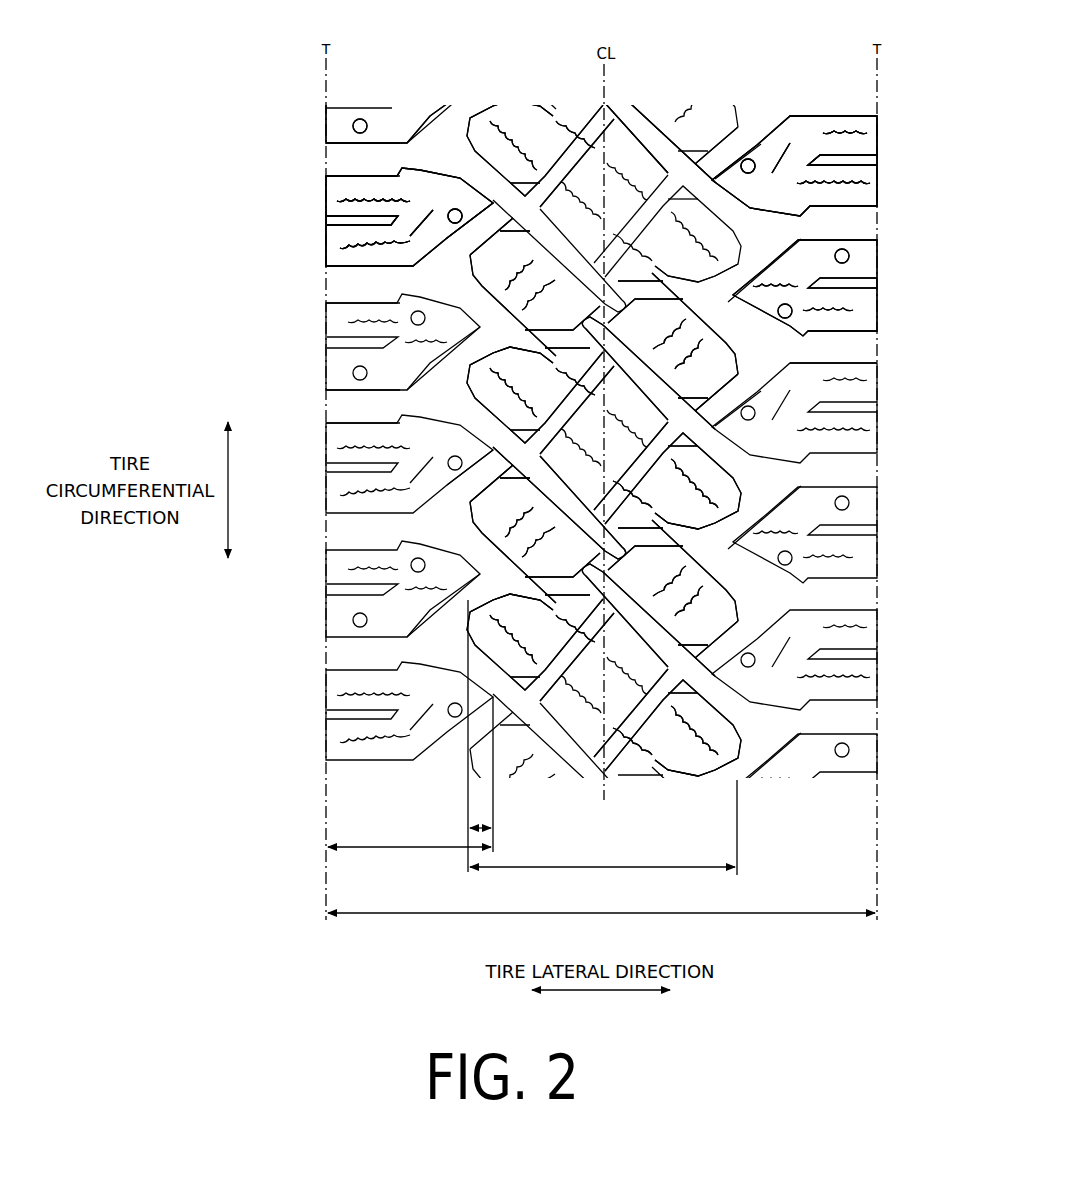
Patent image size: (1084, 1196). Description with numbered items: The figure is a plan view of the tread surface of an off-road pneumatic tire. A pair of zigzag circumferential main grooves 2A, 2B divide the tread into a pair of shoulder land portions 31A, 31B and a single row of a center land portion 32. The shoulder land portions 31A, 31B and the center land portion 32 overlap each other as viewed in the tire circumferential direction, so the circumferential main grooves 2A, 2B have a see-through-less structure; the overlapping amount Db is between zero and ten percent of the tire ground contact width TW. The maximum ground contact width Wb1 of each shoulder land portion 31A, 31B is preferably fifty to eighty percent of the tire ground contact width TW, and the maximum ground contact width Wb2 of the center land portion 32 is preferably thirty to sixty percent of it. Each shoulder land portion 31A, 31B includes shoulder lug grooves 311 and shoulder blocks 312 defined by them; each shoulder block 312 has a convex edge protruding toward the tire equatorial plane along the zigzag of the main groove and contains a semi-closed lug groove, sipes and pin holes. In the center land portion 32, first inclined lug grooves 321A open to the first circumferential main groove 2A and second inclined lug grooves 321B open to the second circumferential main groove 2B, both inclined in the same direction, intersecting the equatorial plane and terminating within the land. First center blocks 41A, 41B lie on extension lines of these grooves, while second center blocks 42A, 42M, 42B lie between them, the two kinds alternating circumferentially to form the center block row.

The first circumferential main groove 2A is at (460, 117).
The second circumferential main groove 2B is at (748, 117).
The shoulder land portion 31A is at (395, 102).
The shoulder land portion 31B is at (783, 102).
The shoulder lug groove 311 is at (330, 155).
The shoulder block 312 is at (323, 200).
The center land portion 32 is at (620, 104).
The first inclined lug groove 321A is at (553, 107).
The second inclined lug groove 321B is at (700, 385).
The first center block 41A is at (709, 317).
The first center block 41B is at (477, 251).
The second center block 42A is at (568, 102).
The second center block 42B is at (715, 212).
The second center block 42M is at (636, 116).
The overlapping amount Db is at (468, 826).
The maximum ground contact width of shoulder land portion Wb1 is at (409, 861).
The maximum ground contact width of center land portion Wb2 is at (602, 882).
The tire ground contact width TW is at (601, 927).